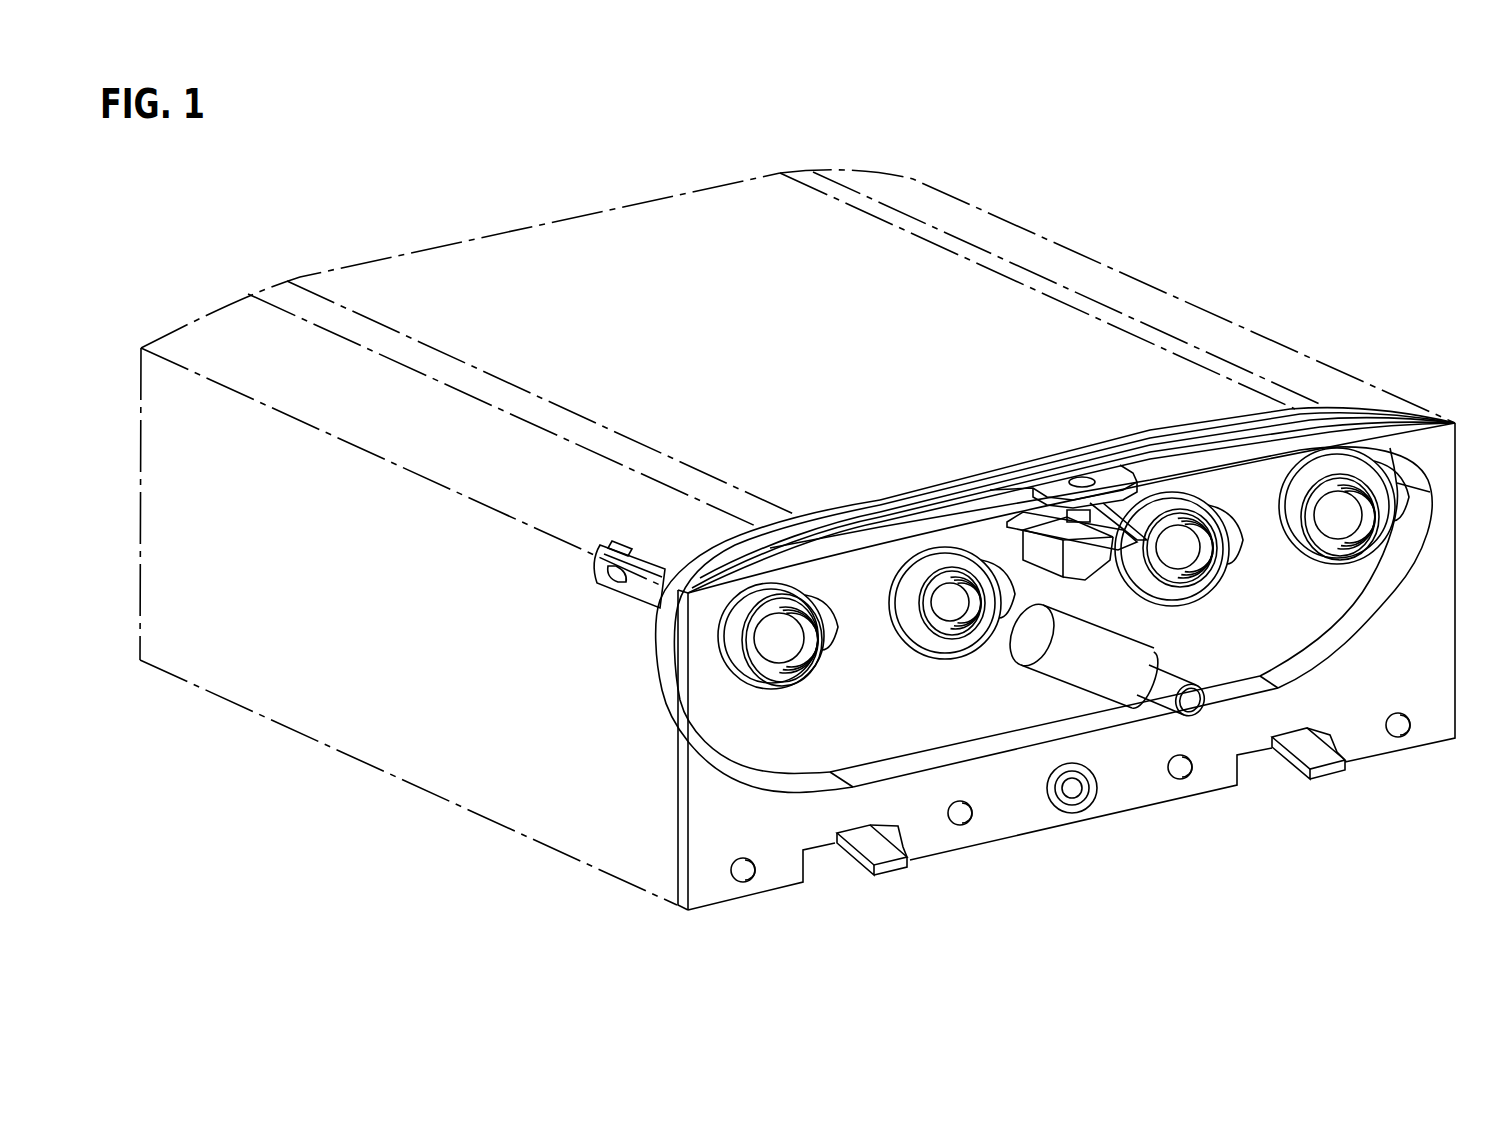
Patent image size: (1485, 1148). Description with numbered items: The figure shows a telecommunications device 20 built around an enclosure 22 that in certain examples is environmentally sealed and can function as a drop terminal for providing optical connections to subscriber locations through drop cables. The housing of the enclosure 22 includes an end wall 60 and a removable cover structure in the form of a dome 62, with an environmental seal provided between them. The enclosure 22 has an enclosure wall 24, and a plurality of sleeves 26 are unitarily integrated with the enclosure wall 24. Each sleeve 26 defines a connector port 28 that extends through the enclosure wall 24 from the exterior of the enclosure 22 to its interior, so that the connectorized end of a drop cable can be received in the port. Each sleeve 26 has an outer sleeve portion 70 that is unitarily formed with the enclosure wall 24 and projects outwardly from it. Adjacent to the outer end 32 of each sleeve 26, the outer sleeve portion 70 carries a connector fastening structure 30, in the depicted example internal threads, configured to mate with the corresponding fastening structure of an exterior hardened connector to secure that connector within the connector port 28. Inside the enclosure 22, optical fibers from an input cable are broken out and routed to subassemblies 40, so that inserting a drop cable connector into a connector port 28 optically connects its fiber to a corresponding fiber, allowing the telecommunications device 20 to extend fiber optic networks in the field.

The telecommunications device 20 is at (565, 160).
The enclosure 22 is at (250, 710).
The enclosure wall 24 is at (438, 653).
The sleeve 26 is at (743, 683).
The connector port 28 is at (1353, 533).
The connector fastening structure 30 is at (793, 673).
The outer end 32 is at (823, 663).
The subassembly 40 is at (617, 600).
The end wall 60 is at (1425, 715).
The dome 62 is at (1037, 233).
The outer sleeve portion 70 is at (927, 563).